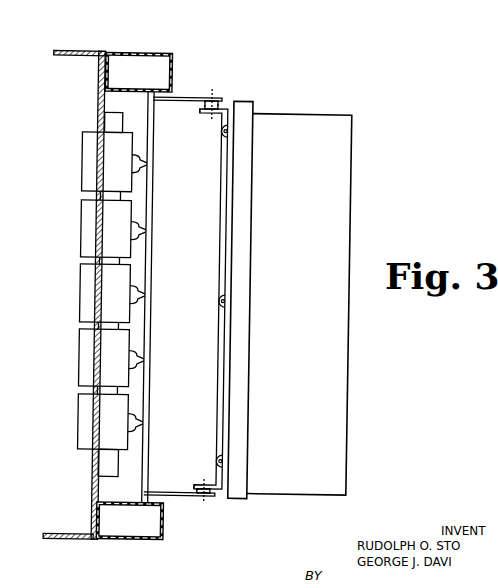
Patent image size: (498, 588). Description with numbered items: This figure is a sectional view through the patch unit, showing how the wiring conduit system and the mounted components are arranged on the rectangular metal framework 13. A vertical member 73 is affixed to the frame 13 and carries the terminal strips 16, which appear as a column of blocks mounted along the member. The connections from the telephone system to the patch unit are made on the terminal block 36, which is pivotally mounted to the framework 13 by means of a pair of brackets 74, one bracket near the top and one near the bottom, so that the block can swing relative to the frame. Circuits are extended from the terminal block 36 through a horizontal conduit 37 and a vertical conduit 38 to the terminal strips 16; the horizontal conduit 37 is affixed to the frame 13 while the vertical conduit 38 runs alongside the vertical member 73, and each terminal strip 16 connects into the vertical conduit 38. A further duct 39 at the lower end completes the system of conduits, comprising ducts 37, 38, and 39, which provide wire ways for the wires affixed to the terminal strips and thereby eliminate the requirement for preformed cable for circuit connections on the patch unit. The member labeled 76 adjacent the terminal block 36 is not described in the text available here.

The rectangular metal framework 13 is at (68, 52).
The horizontal conduit 37 is at (147, 53).
The duct 39 is at (142, 540).
The vertical conduit 38 is at (145, 393).
The terminal strips 16 is at (95, 168).
The vertical members 73 is at (108, 463).
The brackets 74 is at (184, 97).
The mounting strip 76 is at (243, 498).
The terminal block 36 is at (330, 111).